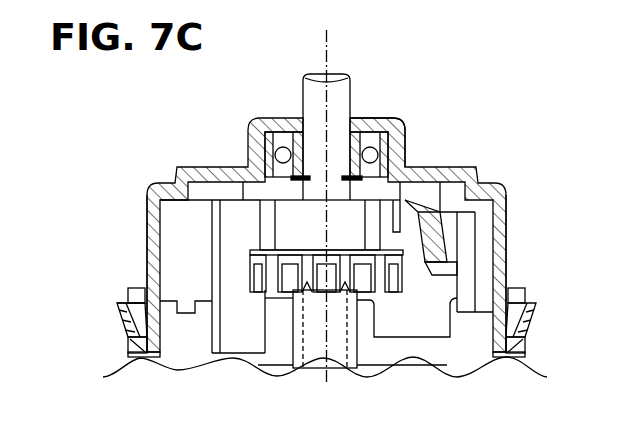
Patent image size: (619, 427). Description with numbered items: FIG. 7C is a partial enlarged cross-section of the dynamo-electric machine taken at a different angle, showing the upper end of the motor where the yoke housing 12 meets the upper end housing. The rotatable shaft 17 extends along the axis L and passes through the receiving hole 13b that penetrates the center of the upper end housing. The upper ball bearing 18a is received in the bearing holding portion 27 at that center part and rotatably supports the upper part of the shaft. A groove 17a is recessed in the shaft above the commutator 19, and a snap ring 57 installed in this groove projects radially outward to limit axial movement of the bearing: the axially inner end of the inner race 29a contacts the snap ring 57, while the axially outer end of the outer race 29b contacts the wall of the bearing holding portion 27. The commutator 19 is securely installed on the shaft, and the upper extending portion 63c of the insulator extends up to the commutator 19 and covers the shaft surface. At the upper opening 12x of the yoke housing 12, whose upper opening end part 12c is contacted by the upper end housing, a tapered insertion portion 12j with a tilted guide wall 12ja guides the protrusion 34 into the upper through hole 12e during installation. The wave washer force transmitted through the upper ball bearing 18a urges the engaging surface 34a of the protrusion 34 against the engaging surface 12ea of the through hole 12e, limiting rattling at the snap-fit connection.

The axis L is at (328, 43).
The yoke housing 12 is at (526, 356).
The upper opening end part 12c is at (530, 300).
The upper through hole 12e is at (128, 353).
The engaging surface 12ea is at (150, 357).
The insertion portion 12j is at (120, 318).
The guide wall 12ja is at (152, 315).
The upper opening 12x is at (133, 276).
The receiving hole 13b is at (353, 118).
The rotatable shaft 17 is at (303, 87).
The groove 17a is at (297, 184).
The upper ball bearing 18a is at (263, 125).
The commutator 19 is at (270, 234).
The bearing holding portion 27 is at (387, 148).
The inner race 29a is at (301, 137).
The outer race 29b is at (268, 162).
The protrusion 34 is at (128, 342).
The engaging surface 34a is at (122, 302).
The snap ring 57 is at (368, 188).
The upper extending portion 63c is at (293, 327).